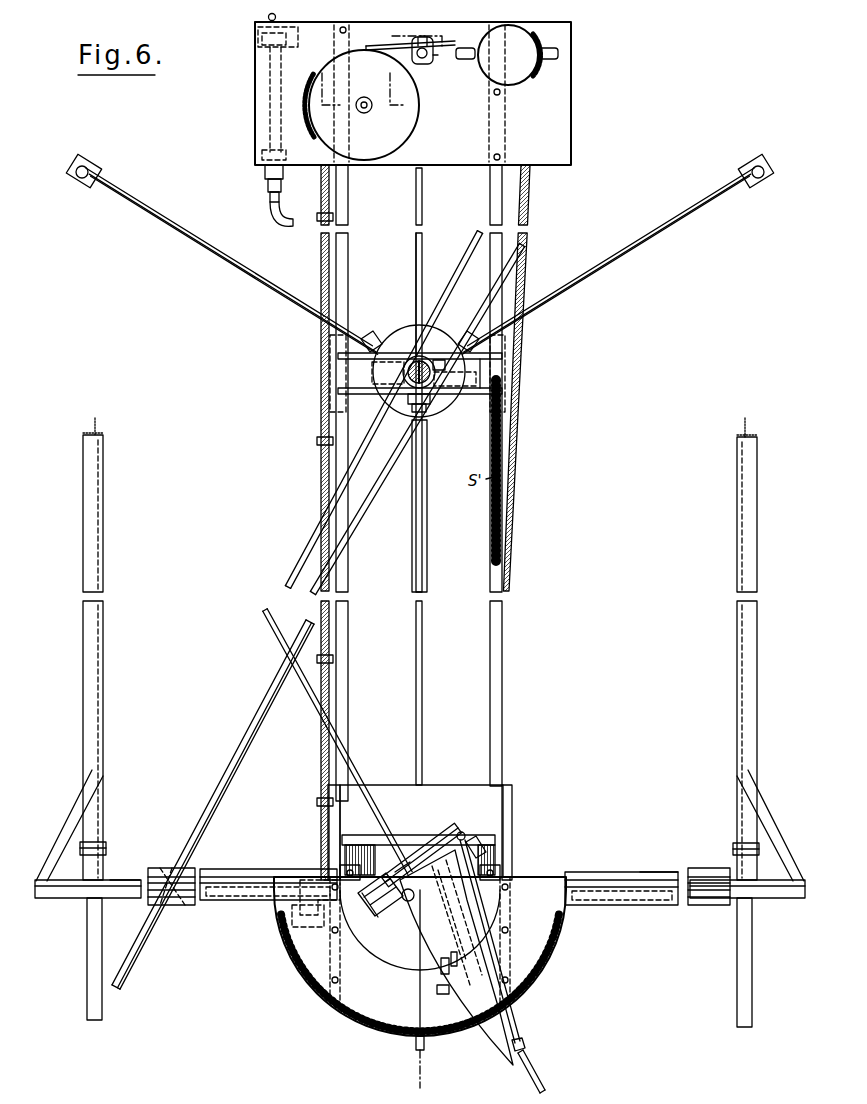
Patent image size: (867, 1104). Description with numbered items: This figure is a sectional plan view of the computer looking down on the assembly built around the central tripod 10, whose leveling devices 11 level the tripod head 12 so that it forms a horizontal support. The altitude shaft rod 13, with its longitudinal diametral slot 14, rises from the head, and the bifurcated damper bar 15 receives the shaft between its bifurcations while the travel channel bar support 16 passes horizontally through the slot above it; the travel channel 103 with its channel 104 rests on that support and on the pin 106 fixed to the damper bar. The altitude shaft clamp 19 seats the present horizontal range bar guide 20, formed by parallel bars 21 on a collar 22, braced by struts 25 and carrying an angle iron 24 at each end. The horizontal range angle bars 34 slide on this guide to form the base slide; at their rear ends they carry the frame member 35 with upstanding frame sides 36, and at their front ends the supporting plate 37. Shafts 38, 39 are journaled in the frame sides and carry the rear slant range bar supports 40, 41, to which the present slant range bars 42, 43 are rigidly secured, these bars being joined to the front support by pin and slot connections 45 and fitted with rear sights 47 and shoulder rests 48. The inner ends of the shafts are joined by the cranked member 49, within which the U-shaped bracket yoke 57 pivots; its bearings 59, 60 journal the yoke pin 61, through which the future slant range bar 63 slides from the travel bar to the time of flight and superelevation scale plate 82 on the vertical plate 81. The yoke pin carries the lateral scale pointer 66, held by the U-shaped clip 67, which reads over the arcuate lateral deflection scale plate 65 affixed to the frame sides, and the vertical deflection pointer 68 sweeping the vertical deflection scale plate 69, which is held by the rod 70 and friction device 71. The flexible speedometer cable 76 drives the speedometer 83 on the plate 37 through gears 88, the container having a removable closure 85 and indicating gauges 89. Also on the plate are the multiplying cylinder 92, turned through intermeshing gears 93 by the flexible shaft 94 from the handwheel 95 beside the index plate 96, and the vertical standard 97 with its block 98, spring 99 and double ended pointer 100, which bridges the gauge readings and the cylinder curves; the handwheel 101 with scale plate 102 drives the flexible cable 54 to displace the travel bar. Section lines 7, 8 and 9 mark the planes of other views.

The section line 7- 7 is at (318, 375).
The section line 8- 8 is at (400, 301).
The section line 9- 9 is at (262, 19).
The tripod 10 is at (640, 247).
The leveling devices 11 is at (76, 178).
The tripod head 12 is at (390, 340).
The altitude shaft rod 13 is at (425, 358).
The longitudinal diametral slot 14 is at (414, 358).
The bifurcated damper bar 15 is at (204, 790).
The travel channel bar support 16 is at (422, 720).
The altitude shaft clamp 19 is at (436, 406).
The present horizontal range bar guide 20 is at (358, 395).
The parallel bars 21 is at (486, 360).
The collar 22 is at (447, 367).
The angle iron 24 is at (506, 350).
The struts 25 is at (400, 377).
The horizontal range angle bars 34 is at (348, 630).
The frame member 35 is at (444, 795).
The frame sides 36 is at (328, 818).
The supporting member or plate 37 is at (566, 131).
The shaft 38 is at (247, 875).
The shaft 39 is at (592, 878).
The rear slant range bar support 40 is at (68, 897).
The rear slant range bar support 41 is at (768, 897).
The present slant range bar 42 is at (103, 540).
The present slant range bar 43 is at (757, 510).
The pin and slot connection 45 is at (103, 428).
The rear sights 47 is at (104, 845).
The shoulder rests 48 is at (87, 998).
The cranked member 49 is at (357, 835).
The flexible cable 54 is at (290, 224).
The U-shaped bracket yoke 57 is at (462, 822).
The bearing 59 is at (410, 902).
The bearing 60 is at (452, 878).
The yoke pin 61 is at (366, 910).
The future slant range bar 63 is at (368, 800).
The arcuate lateral deflection scale plate 65 is at (557, 935).
The lateral scale pointer 66 is at (444, 972).
The U-shaped clip 67 is at (398, 870).
The vertical deflection pointer 68 is at (495, 996).
The vertical deflection scale plate 69 is at (496, 1040).
The rod 70 is at (448, 1000).
The friction device 71 is at (451, 990).
The flexible speedometer cable 76 is at (524, 265).
The vertical bar or plate 81 is at (454, 915).
The time of flight and superelevation scale plate 82 is at (532, 1068).
The speedometer 83 is at (516, 83).
The removable closure 85 is at (508, 55).
The gears 88 is at (540, 70).
The indicating gauges 89 is at (466, 48).
The multiplying cylinder 92 is at (405, 133).
The intermeshing gears 93 is at (306, 118).
The flexible shaft 94 is at (321, 200).
The handwheel 95 is at (300, 930).
The index plate 96 is at (300, 926).
The vertical standard 97 is at (423, 61).
The block 98 is at (436, 54).
The spring 99 is at (422, 36).
The double ended pointer 100 is at (380, 45).
The handwheel 101 is at (292, 36).
The scale plate 102 is at (286, 42).
The travel channel 103 is at (150, 870).
The channel 104 is at (130, 882).
The pin 106 is at (170, 900).